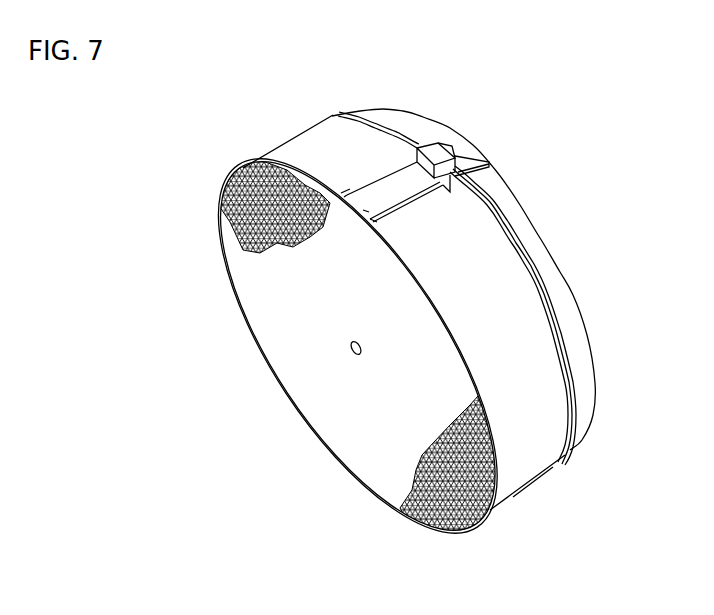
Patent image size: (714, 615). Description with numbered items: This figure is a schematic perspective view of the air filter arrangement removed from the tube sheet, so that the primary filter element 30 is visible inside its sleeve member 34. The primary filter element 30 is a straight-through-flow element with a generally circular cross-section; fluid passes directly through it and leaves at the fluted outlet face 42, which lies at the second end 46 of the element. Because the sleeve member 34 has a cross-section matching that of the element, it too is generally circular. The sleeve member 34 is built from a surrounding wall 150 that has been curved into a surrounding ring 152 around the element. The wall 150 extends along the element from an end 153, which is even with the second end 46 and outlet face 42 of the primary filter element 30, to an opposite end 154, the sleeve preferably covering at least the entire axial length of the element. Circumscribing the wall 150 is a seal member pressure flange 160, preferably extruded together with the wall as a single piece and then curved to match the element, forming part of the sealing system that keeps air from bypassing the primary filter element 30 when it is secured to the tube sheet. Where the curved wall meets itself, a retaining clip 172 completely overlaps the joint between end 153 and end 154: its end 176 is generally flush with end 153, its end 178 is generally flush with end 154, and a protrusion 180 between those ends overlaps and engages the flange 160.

The primary filter element 30 is at (237, 198).
The sleeve member 34 is at (447, 78).
The outlet face 42 is at (420, 520).
The second end 46 is at (455, 525).
The surrounding wall 150 is at (573, 314).
The surrounding ring 152 is at (532, 235).
The end 153 is at (497, 512).
The opposite end 154 is at (600, 365).
The seal member pressure flange 160 is at (571, 452).
The retaining clip 172 is at (453, 147).
The end 176 is at (358, 215).
The end 178 is at (473, 148).
The protrusion 180 is at (427, 150).